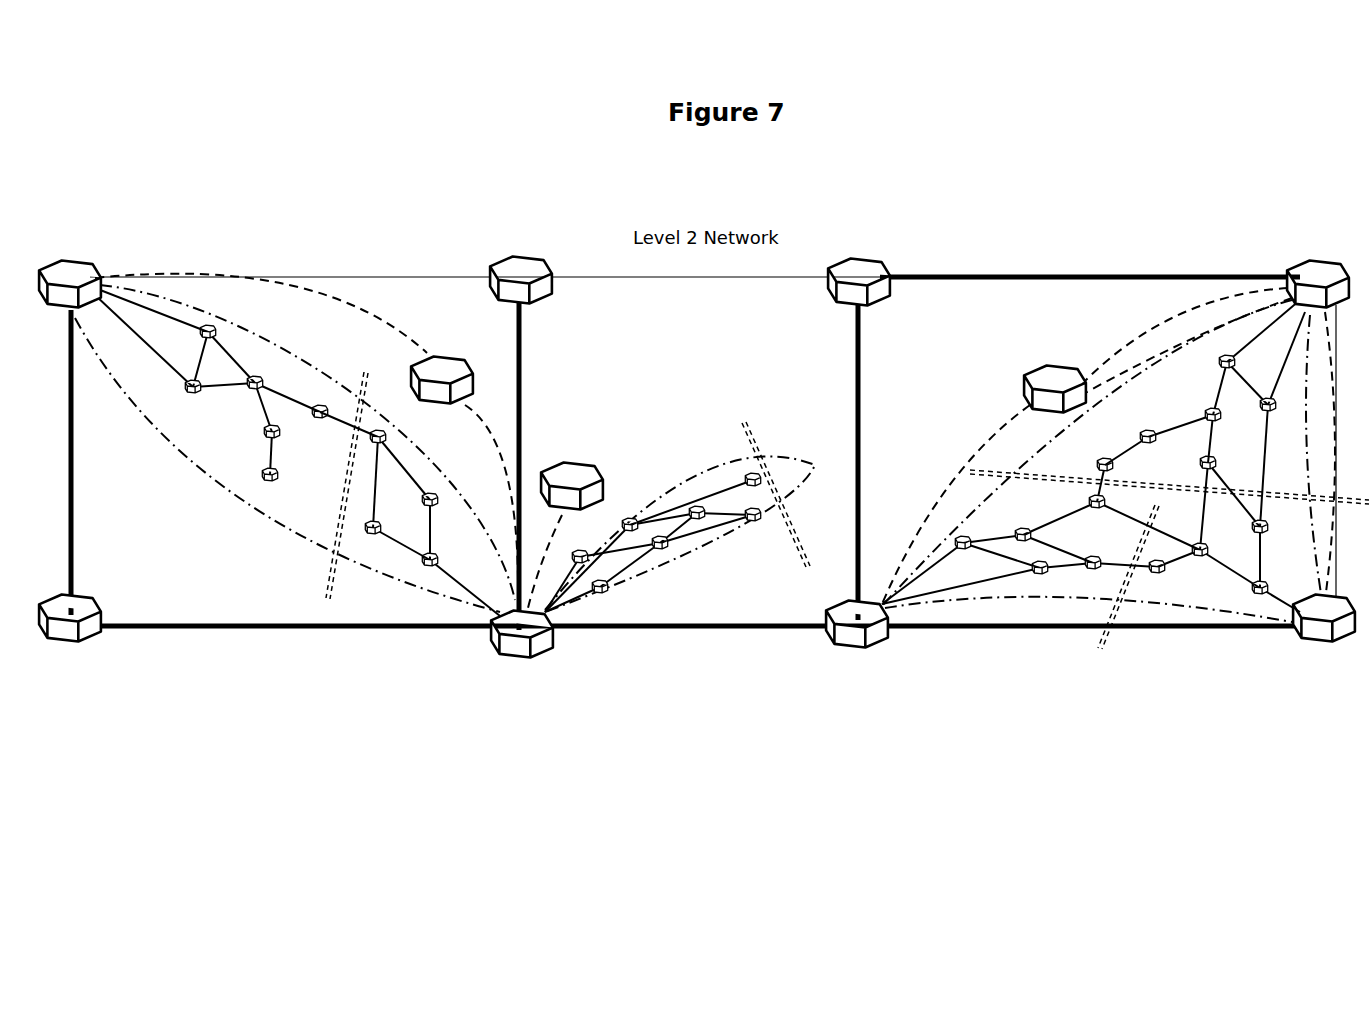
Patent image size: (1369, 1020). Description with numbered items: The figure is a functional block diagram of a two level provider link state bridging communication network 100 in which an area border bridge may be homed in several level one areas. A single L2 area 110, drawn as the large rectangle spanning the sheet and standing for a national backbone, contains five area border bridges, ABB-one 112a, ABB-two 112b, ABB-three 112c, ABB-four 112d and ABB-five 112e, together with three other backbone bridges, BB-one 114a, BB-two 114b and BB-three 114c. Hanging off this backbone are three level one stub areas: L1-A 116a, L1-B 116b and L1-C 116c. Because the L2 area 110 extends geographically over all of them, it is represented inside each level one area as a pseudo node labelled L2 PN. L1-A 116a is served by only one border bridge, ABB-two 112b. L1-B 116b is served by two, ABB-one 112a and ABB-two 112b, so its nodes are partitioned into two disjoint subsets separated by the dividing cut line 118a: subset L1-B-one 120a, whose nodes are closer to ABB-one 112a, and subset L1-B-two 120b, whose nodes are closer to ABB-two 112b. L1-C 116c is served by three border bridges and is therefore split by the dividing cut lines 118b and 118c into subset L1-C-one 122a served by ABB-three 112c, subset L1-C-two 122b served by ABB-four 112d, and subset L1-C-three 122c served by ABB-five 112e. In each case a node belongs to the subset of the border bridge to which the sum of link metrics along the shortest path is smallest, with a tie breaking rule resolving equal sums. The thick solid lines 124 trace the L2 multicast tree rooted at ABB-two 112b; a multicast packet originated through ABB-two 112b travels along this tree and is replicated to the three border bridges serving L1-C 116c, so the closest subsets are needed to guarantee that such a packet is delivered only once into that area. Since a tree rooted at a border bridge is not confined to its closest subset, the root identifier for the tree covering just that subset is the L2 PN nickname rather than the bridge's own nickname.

The PLSB communication network 100 is at (1322, 176).
The L2 area 110 is at (420, 375).
The ABB-1 112a is at (92, 268).
The ABB-2 112b is at (552, 648).
The ABB-3 112c is at (885, 642).
The ABB-4 112d is at (1290, 640).
The ABB-5 112e is at (1290, 268).
The BB-1 114a is at (105, 638).
The BB-2 114b is at (490, 272).
The BB-3 114c is at (890, 272).
The L1-A 116a is at (734, 468).
The L1-B 116b is at (216, 490).
The L1-C 116c is at (1035, 455).
The dividing cut line 118a is at (326, 557).
The dividing cut line 118b is at (995, 470).
The dividing cut line 118c is at (1100, 630).
The subset L1-B1 120a is at (245, 457).
The subset L1-B2 120b is at (506, 568).
The subset L1-C1 122a is at (1022, 527).
The subset L1-C2 122b is at (1250, 615).
The subset L1-C3 122c is at (1197, 418).
The thick solid lines 124 is at (346, 630).